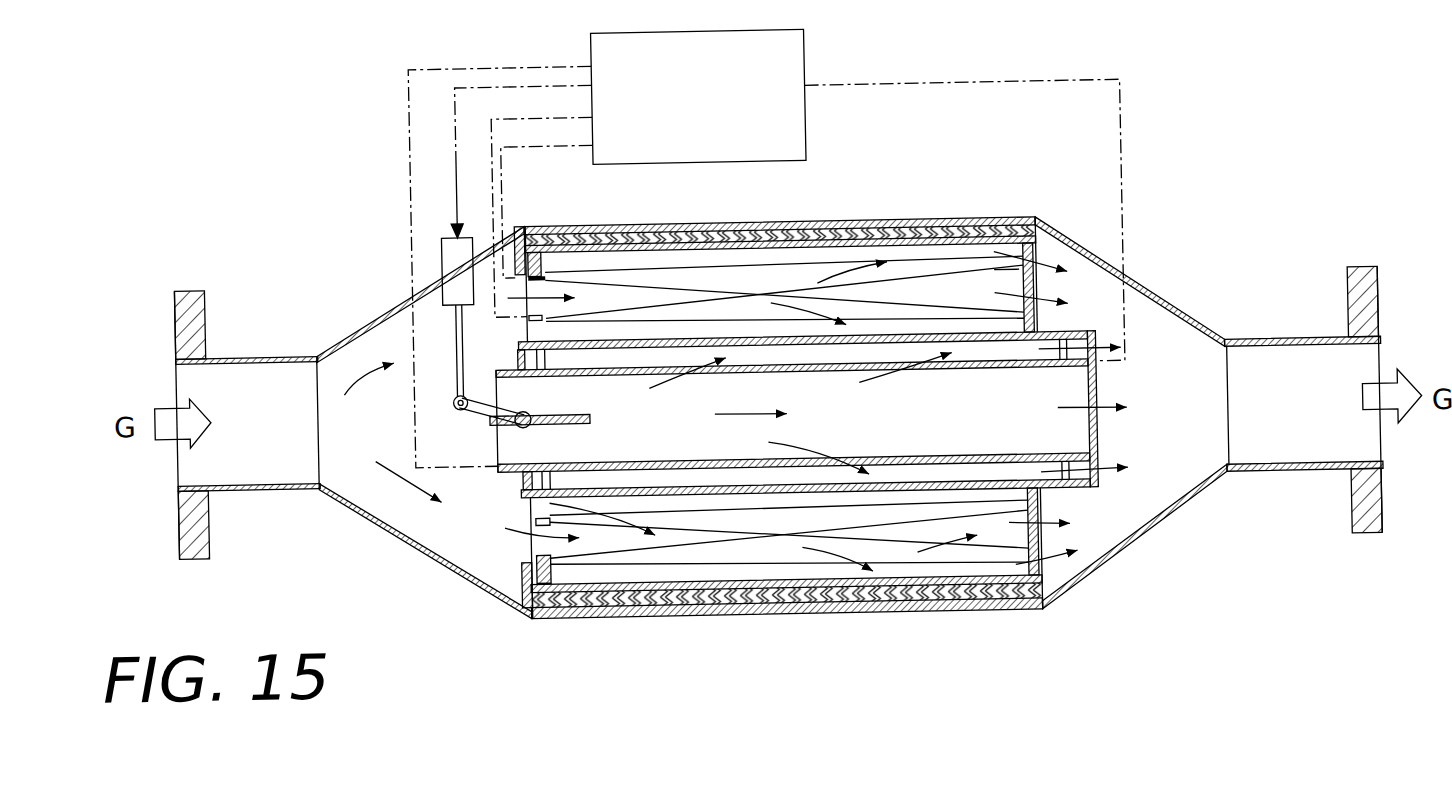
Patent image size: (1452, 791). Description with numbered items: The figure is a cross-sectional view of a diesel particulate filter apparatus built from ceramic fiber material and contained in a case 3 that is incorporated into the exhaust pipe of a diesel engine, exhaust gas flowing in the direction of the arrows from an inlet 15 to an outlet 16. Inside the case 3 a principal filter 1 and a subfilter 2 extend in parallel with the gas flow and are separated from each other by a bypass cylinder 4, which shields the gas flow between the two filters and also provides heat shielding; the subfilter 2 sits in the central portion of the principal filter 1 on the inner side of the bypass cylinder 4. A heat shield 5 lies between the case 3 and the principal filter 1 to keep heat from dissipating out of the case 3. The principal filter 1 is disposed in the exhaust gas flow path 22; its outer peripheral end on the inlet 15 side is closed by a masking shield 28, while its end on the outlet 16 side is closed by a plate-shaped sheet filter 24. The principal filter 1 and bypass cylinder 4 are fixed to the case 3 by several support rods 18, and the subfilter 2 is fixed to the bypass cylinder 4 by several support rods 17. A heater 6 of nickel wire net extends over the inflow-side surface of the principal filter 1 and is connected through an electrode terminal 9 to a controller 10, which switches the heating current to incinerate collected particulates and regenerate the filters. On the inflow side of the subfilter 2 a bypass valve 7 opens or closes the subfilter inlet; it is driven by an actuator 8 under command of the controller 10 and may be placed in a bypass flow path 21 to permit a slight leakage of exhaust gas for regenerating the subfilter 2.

The principal filter 1 is at (922, 310).
The subfilter 2 is at (932, 382).
The case 3 is at (1150, 307).
The bypass cylinder 4 is at (810, 356).
The heat shield 5 is at (835, 251).
The heater 6 is at (970, 312).
The bypass valve 7 is at (563, 418).
The actuator 8 is at (453, 271).
The electrode terminal 9 is at (547, 281).
The controller 10 is at (663, 115).
The inlet 15 is at (273, 435).
The outlet 16 is at (1299, 436).
The support rods 17 is at (520, 363).
The support rods 18 is at (540, 268).
The bypass flow path 21 is at (686, 448).
The exhaust gas flow path 22 is at (348, 440).
The sheet filter 24 is at (1017, 295).
The masking shield 28 is at (510, 245).